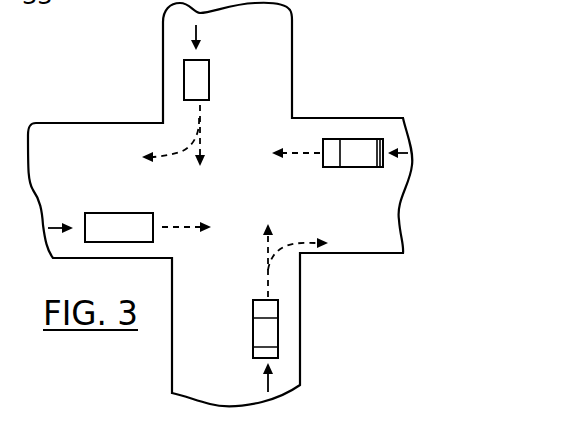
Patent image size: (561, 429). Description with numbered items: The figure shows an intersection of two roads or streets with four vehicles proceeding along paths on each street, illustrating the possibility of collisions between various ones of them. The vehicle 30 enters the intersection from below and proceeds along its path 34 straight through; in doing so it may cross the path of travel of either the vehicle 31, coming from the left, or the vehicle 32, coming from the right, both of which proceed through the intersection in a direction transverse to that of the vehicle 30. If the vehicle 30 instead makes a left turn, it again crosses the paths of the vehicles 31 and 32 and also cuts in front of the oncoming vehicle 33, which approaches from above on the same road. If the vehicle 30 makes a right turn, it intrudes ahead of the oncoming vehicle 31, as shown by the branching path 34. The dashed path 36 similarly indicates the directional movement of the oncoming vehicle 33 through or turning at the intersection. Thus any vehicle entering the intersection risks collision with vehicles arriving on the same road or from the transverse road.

The vehicle 30 is at (265, 332).
The vehicle 31 is at (103, 222).
The vehicle 32 is at (354, 152).
The oncoming vehicle 33 is at (188, 86).
The path 34 is at (267, 272).
The predicted path of vehicle 33 36 is at (163, 157).